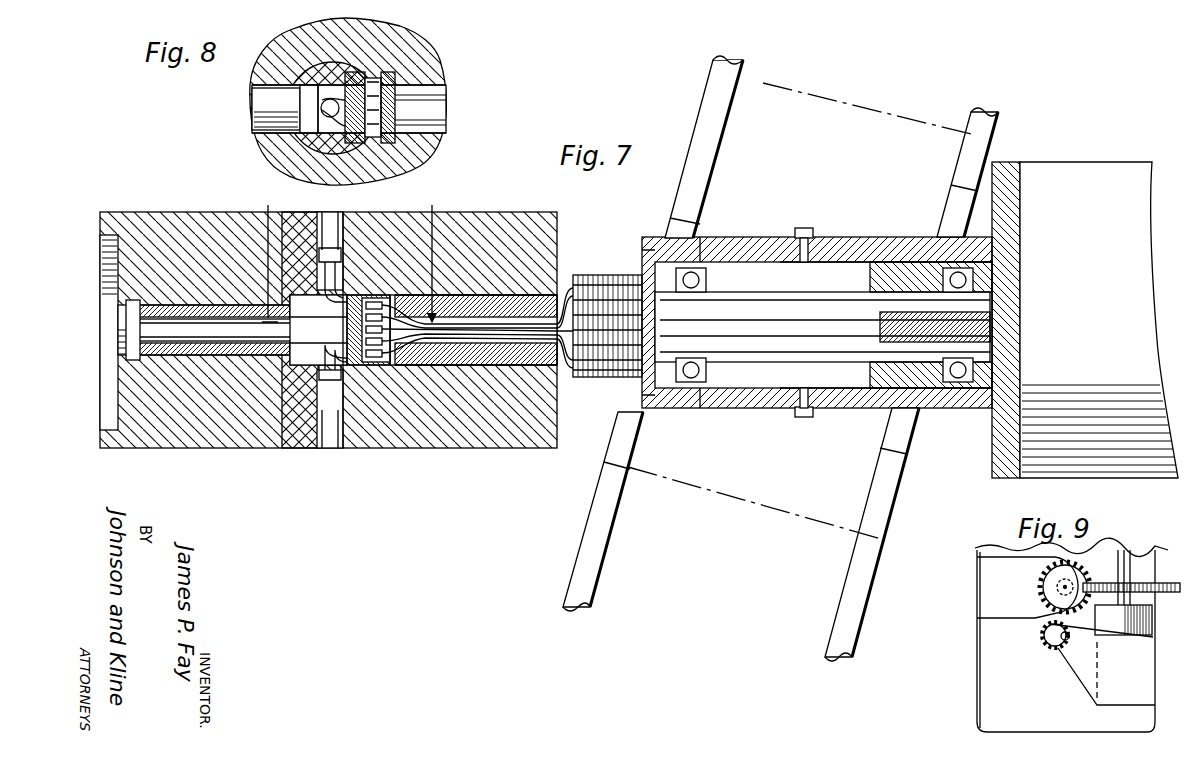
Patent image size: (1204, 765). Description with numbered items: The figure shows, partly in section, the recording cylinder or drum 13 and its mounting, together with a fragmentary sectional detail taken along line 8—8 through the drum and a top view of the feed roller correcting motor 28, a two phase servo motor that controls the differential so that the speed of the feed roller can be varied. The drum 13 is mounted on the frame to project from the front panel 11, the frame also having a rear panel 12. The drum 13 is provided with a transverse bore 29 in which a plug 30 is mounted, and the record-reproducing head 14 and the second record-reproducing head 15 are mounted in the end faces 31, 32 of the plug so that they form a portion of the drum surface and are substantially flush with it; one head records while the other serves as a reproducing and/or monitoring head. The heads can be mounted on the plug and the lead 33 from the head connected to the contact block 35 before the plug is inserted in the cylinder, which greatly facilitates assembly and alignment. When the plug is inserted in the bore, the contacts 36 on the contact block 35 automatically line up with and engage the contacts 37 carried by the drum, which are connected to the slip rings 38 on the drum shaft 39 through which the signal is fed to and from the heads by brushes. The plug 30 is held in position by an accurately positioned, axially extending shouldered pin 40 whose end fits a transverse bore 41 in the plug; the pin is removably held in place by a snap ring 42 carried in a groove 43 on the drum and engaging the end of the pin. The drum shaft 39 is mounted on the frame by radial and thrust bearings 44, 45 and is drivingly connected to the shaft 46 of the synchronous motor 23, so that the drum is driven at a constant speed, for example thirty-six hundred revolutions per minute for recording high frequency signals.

In FIG. 7, the section line 8— 8 is at (348, 251).
In FIG. 7, the front panel 11 is at (710, 88).
In FIG. 7, the rear panel 12 is at (985, 160).
In FIG. 7, the cylinder or drum 13 is at (203, 448).
In FIG. 8, the cylinder or drum 13 is at (420, 63).
In FIG. 7, the record-reproducing head 14 is at (328, 212).
In FIG. 7, the second record-reproducing head 15 is at (330, 448).
In FIG. 8, the second record-reproducing head 15 is at (310, 100).
In FIG. 7, the synchronous motor 23 is at (1080, 182).
In FIG. 9, the two phase servo motor 28 is at (975, 657).
In FIG. 7, the transverse bore 29 is at (276, 448).
In FIG. 7, the plug 30 is at (372, 448).
In FIG. 8, the plug 30 is at (318, 72).
In FIG. 7, the end face 31 is at (352, 295).
In FIG. 7, the end face 32 is at (382, 298).
In FIG. 7, the lead 33 is at (303, 448).
In FIG. 8, the lead 33 is at (322, 128).
In FIG. 7, the contact block 35 is at (388, 448).
In FIG. 8, the contact block 35 is at (356, 70).
In FIG. 7, the contacts 36 is at (425, 448).
In FIG. 8, the contacts 36 is at (430, 140).
In FIG. 8, the contacts 37 is at (392, 78).
In FIG. 7, the slip rings 38 is at (603, 272).
In FIG. 7, the drum shaft 39 is at (555, 372).
In FIG. 8, the drum shaft 39 is at (436, 128).
In FIG. 7, the shouldered pin 40 is at (215, 305).
In FIG. 8, the shouldered pin 40 is at (262, 100).
In FIG. 7, the transverse bore 41 is at (300, 295).
In FIG. 8, the transverse bore 41 is at (292, 60).
In FIG. 7, the snap ring 42 is at (126, 342).
In FIG. 7, the groove 43 is at (128, 362).
In FIG. 7, the radial bearing 44 is at (698, 240).
In FIG. 7, the thrust bearing 45 is at (955, 270).
In FIG. 7, the motor shaft 46 is at (948, 342).